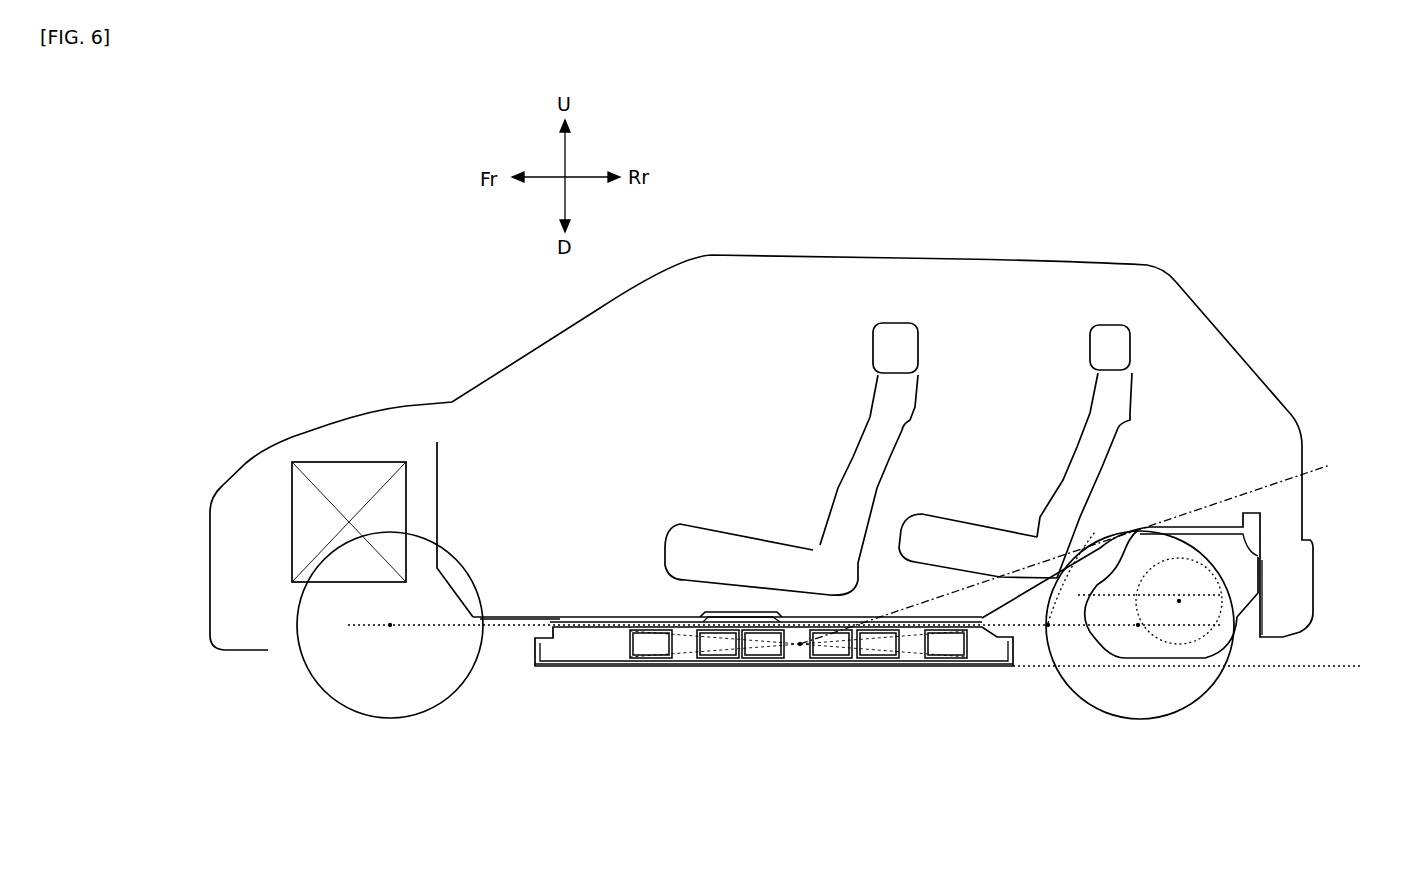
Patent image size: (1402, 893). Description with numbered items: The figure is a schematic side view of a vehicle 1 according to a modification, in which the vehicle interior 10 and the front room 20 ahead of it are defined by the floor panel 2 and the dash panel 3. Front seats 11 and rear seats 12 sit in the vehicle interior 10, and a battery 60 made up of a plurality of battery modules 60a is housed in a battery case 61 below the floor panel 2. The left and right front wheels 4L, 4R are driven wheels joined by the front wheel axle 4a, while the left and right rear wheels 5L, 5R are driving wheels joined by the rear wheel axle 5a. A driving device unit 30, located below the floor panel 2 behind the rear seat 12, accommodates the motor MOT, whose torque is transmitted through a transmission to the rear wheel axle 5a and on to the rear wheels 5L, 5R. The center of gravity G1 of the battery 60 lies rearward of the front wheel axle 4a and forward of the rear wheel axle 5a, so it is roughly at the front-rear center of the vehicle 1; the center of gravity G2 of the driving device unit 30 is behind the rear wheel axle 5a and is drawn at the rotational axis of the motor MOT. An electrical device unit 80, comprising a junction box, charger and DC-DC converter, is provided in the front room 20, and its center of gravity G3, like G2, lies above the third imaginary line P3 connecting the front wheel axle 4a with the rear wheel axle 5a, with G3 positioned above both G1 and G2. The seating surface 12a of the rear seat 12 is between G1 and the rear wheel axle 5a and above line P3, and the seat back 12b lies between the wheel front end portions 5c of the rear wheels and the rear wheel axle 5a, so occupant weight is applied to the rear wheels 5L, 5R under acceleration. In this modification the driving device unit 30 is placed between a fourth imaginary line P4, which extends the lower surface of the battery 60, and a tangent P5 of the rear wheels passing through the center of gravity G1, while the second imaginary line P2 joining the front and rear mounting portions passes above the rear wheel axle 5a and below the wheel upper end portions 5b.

The vehicle 1 is at (433, 254).
The floor panel 2 is at (530, 617).
The dash panel 3 is at (440, 480).
The left front wheel 4L is at (759, 643).
The right front wheel 4R is at (467, 680).
The front wheel axle 4a is at (390, 627).
The left rear wheel 5L is at (1160, 620).
The right rear wheel 5R is at (1220, 670).
The rear wheel axle 5a is at (1138, 625).
The wheel upper end portion 5b is at (1138, 530).
The wheel front end portion 5c is at (1048, 625).
The vehicle interior 10 is at (764, 359).
The front seat 11 is at (865, 445).
The rear seat 12 is at (1077, 440).
The seating surface 12a is at (953, 540).
The seat back 12b is at (1088, 468).
The front room 20 is at (396, 449).
The driving device unit 30 is at (1280, 636).
The battery 60 is at (625, 645).
The battery module 60a is at (875, 643).
The battery case 61 is at (912, 666).
The electrical device unit 80 is at (323, 462).
The center of gravity of the battery G1 is at (800, 645).
The center of gravity of the driving device unit G2 is at (1179, 603).
The center of gravity of the electrical device unit G3 is at (347, 521).
The motor MOT is at (1190, 650).
The second imaginary line P2 is at (1115, 595).
The third imaginary line P3 is at (417, 627).
The fourth imaginary line P4 is at (1343, 668).
The tangent P5 is at (1284, 478).